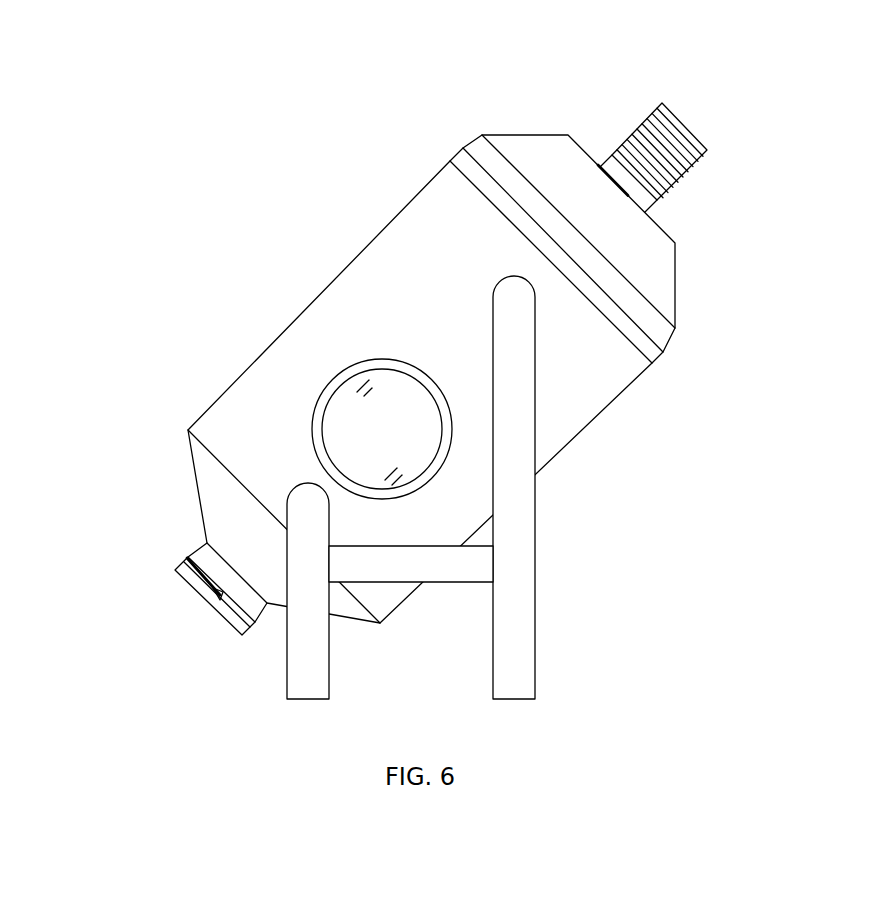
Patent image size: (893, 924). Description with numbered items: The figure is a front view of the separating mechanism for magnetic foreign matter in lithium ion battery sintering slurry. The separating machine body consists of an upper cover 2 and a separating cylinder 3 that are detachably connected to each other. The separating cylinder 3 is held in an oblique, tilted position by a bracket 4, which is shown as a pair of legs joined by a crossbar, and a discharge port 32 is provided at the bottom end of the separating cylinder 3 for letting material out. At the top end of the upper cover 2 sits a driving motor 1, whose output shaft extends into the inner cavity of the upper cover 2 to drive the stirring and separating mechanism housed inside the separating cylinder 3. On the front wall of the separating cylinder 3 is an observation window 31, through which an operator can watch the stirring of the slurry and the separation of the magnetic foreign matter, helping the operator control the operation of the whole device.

The driving motor 1 is at (667, 129).
The upper cover 2 is at (562, 211).
The separating cylinder 3 is at (420, 390).
The observation window 31 is at (307, 392).
The discharge port 32 is at (180, 599).
The bracket 4 is at (452, 487).